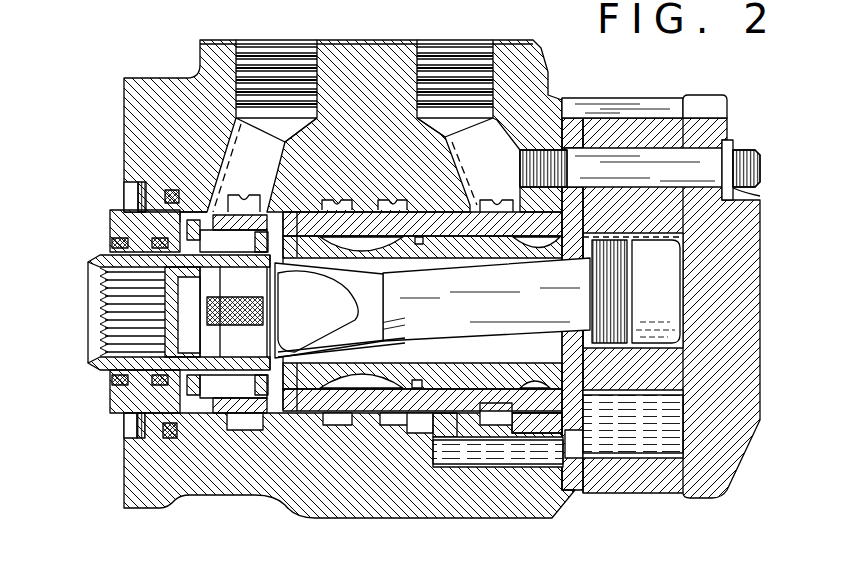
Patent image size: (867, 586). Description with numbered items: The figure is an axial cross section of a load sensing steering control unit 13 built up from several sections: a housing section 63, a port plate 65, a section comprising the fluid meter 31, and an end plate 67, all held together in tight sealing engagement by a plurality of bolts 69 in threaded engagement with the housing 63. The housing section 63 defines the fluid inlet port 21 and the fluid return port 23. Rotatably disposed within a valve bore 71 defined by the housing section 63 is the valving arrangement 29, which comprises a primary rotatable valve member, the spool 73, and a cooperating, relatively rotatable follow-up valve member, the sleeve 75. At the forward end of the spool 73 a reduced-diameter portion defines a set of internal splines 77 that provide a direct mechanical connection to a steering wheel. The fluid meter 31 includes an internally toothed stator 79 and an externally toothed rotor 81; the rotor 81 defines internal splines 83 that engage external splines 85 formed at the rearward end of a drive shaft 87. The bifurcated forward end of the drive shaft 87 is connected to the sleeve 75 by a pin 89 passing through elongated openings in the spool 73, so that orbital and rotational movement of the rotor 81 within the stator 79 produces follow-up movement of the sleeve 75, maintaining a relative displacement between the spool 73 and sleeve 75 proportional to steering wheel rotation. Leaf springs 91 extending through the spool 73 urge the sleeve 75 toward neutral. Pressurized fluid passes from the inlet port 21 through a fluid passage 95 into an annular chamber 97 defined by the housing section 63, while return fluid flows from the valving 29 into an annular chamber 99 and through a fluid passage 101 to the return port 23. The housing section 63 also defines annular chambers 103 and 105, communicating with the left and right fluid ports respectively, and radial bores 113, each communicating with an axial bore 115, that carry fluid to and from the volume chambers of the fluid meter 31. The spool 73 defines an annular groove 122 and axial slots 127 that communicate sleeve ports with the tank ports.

The steering control unit 13 is at (114, 128).
The housing section 63 is at (172, 85).
The fluid return port 23 is at (291, 62).
The fluid inlet port 21 is at (470, 60).
The port plate 65 is at (566, 97).
The fluid meter 31 is at (621, 87).
The end plate 67 is at (712, 106).
The bolts 69 is at (745, 155).
The annular chamber 99 is at (240, 198).
The fluid passage 101 is at (278, 152).
The annular chamber 103 is at (338, 200).
The annular chamber 105 is at (390, 200).
The annular chamber 97 is at (494, 200).
The fluid passage 95 is at (490, 132).
The internal splines 77 is at (100, 335).
The leaf springs 91 is at (230, 297).
The pin 89 is at (280, 373).
The axial slots 127 is at (352, 240).
The drive shaft 87 is at (451, 300).
The sleeve 75 is at (462, 226).
The annular groove 122 is at (519, 242).
The valving arrangement 29 is at (477, 358).
The spool 73 is at (493, 383).
The external splines 85 is at (610, 287).
The internal splines 83 is at (655, 350).
The rotor 81 is at (660, 371).
The valve bore 71 is at (313, 410).
The radial bores 113 is at (433, 423).
The axial bore 115 is at (513, 460).
The stator 79 is at (660, 478).